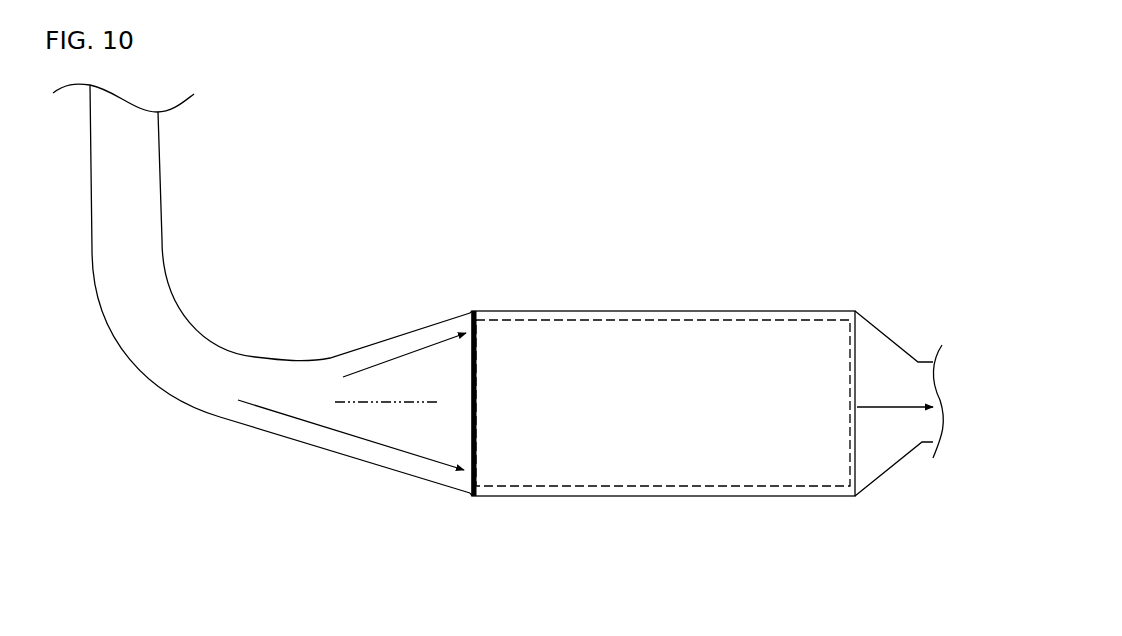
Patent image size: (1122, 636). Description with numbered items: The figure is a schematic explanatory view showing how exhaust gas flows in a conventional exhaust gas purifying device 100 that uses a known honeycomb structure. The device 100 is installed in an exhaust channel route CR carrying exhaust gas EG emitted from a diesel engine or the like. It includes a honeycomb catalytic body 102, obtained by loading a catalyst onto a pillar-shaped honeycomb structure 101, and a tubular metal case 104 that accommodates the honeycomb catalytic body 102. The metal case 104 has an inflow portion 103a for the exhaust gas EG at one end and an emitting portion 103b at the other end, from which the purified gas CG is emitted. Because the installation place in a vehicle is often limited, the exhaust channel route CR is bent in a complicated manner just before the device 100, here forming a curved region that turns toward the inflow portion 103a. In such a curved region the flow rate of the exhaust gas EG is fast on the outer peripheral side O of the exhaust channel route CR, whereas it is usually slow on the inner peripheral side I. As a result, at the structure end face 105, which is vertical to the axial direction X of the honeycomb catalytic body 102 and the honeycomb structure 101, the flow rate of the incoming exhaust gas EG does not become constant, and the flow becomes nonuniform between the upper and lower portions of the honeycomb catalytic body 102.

The exhaust gas purifying device 100 is at (688, 381).
The honeycomb structure 101 is at (663, 368).
The honeycomb catalytic body 102 is at (577, 335).
The inflow portion 103a is at (447, 490).
The emitting portion 103b is at (883, 462).
The metal case 104 is at (703, 497).
The structure end face 105 is at (473, 310).
The exhaust channel route CR is at (226, 202).
The inner peripheral side I is at (250, 310).
The outer peripheral side O is at (153, 397).
The exhaust gas EG is at (397, 358).
The purified gas CG is at (900, 397).
The axial direction X is at (381, 405).